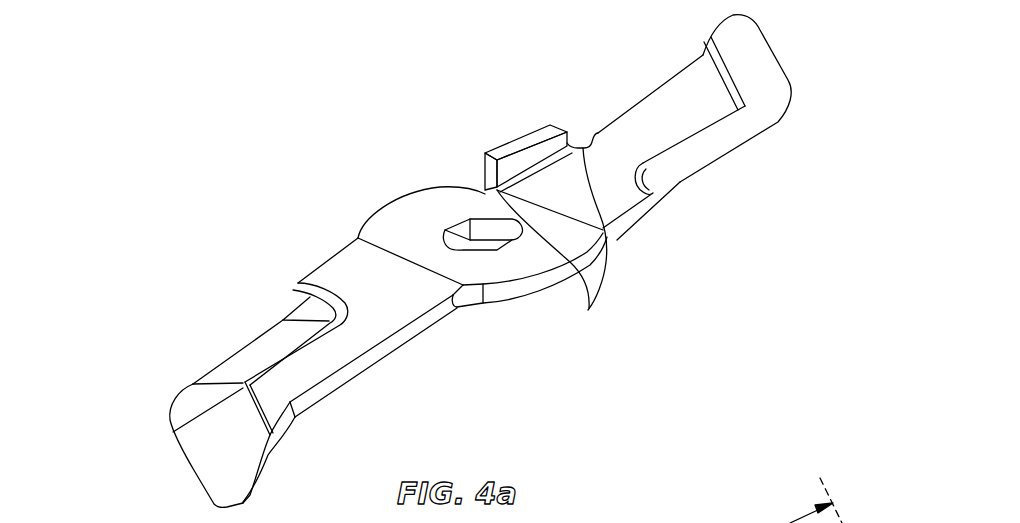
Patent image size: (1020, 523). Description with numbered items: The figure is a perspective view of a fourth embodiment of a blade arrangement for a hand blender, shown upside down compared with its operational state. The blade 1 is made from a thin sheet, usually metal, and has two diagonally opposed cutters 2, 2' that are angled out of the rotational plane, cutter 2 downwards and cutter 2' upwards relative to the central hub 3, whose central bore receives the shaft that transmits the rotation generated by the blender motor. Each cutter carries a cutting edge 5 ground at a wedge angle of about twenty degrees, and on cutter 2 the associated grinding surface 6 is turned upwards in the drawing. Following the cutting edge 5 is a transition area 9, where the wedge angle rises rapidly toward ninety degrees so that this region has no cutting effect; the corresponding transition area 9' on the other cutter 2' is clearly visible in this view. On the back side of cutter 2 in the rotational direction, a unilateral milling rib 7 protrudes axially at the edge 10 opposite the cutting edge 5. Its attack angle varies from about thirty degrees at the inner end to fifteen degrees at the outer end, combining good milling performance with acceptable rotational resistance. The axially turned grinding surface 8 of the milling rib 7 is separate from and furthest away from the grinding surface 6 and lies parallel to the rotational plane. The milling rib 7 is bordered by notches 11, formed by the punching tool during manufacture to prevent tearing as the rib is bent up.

The blade 1 is at (207, 214).
The cutter 2 is at (671, 128).
The cutter 2' is at (313, 373).
The hub 3 is at (394, 221).
The cutting edge 5 is at (768, 133).
The grinding surface 6 is at (763, 78).
The milling rib 7 is at (480, 170).
The grinding surface 8 is at (522, 142).
The transition area 9 is at (671, 197).
The transition area 9' is at (296, 354).
The edge 10 is at (610, 121).
The notch 11 is at (588, 309).